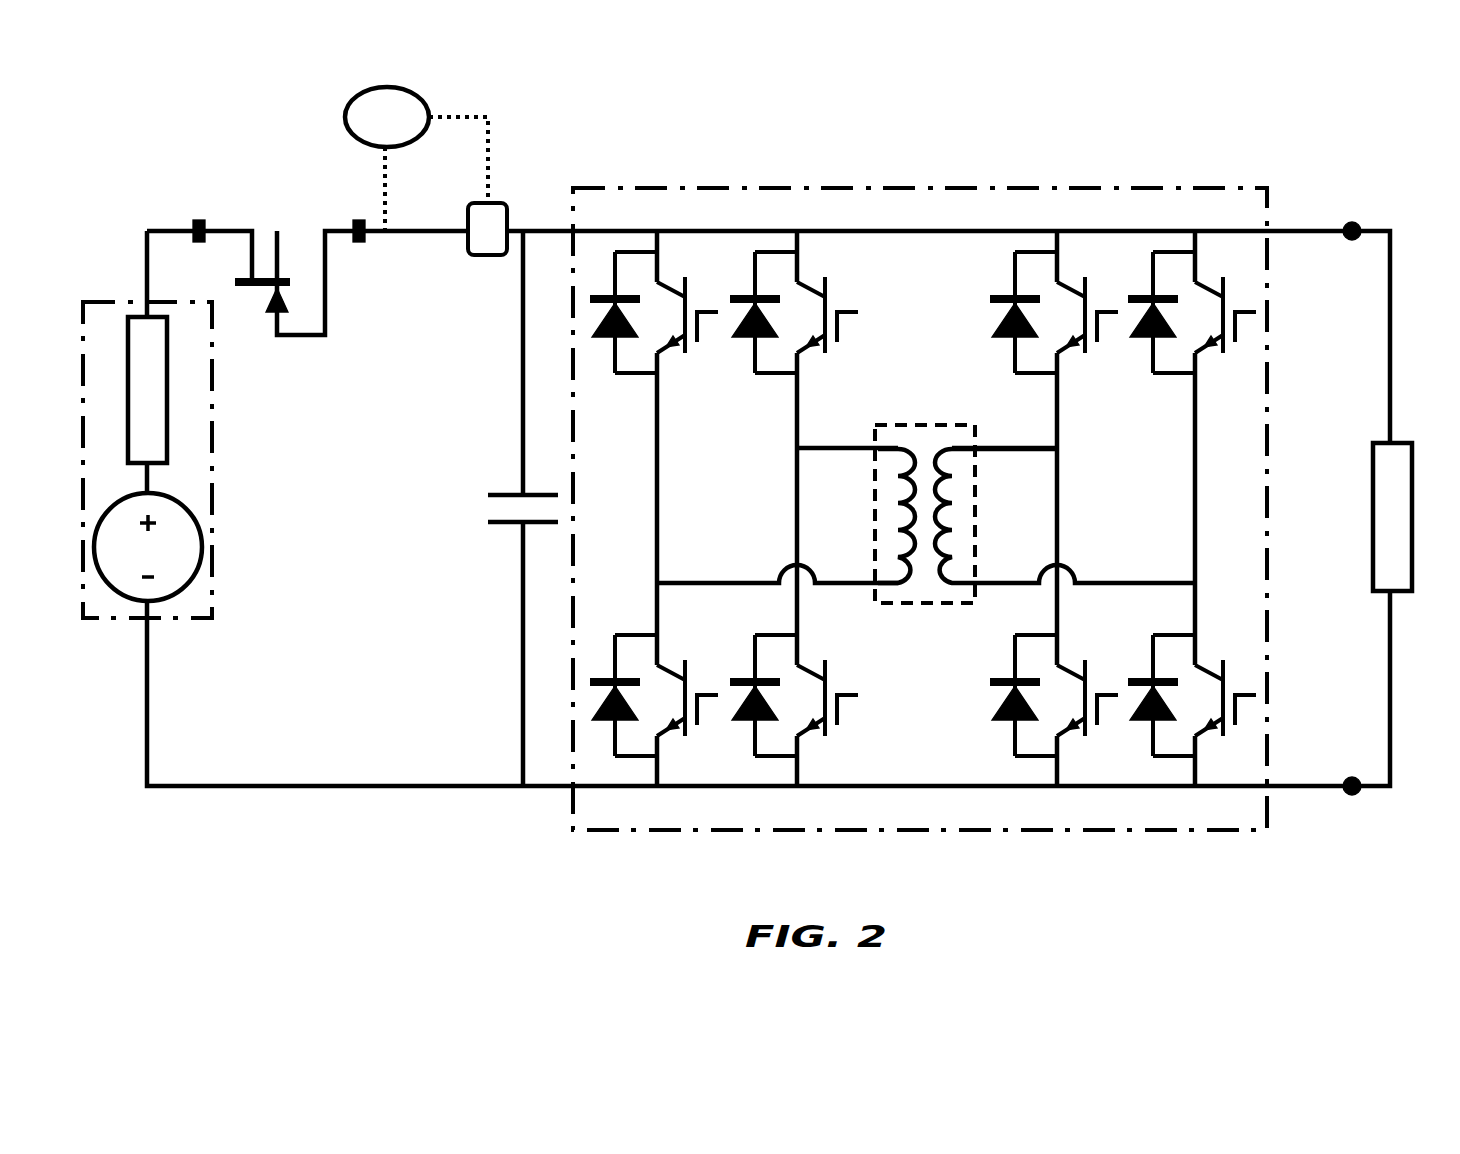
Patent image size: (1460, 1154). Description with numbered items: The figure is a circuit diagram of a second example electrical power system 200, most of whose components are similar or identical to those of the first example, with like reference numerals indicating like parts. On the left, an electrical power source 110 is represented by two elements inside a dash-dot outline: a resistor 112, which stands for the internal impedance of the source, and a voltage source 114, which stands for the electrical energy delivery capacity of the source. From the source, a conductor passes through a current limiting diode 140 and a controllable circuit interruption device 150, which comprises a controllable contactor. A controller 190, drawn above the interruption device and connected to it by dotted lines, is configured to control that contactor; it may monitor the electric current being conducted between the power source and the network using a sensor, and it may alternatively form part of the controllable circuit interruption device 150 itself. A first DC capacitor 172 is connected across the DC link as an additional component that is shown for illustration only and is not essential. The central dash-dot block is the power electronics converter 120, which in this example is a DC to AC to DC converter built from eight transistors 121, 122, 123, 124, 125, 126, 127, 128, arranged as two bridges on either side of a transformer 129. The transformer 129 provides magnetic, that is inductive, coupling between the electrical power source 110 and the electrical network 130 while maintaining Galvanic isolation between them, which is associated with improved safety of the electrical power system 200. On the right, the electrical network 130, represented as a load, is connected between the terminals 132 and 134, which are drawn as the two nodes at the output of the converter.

The electrical power system 200 is at (147, 97).
The electrical power source 110 is at (205, 503).
The resistor 112 is at (167, 428).
The voltage source 114 is at (203, 534).
The power electronics converter 120 is at (885, 188).
The transistor 121 is at (658, 364).
The transistor 122 is at (625, 636).
The transistor 123 is at (795, 378).
The transistor 124 is at (768, 640).
The transistor 125 is at (1058, 364).
The transistor 126 is at (1012, 655).
The transistor 127 is at (1193, 378).
The transistor 128 is at (1172, 633).
The transformer 129 is at (882, 427).
The electrical network 130 is at (1412, 550).
The terminal 132 is at (1347, 228).
The terminal 134 is at (1352, 796).
The current limiting diode 140 is at (303, 337).
The controllable circuit interruption device 150 is at (491, 256).
The first DC capacitor 172 is at (503, 496).
The controller 190 is at (347, 103).